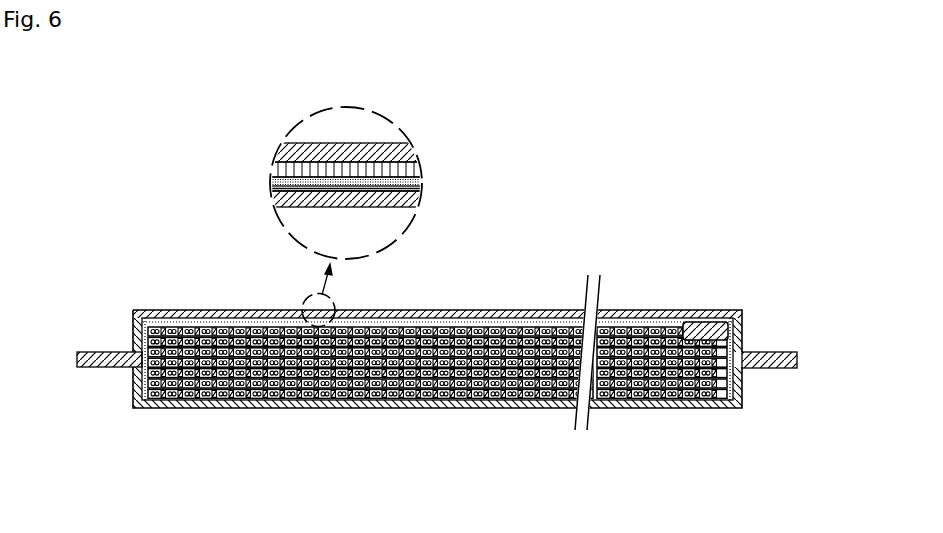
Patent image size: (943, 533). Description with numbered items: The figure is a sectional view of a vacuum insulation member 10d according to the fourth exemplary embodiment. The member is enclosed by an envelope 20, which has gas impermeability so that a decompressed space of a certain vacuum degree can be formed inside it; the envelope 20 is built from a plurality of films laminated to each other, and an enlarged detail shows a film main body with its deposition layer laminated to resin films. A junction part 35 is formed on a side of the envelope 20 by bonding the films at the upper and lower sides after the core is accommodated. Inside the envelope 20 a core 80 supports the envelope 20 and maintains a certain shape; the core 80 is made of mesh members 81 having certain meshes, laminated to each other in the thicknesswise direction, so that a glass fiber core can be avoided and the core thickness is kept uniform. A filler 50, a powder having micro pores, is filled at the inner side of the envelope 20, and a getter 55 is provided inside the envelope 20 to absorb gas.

The vacuum insulation member 10d is at (162, 229).
The envelope 20 is at (437, 361).
The junction part 35 is at (102, 352).
The filler 50 is at (438, 395).
The getter 55 is at (705, 333).
The core 80 is at (507, 395).
The mesh member 81 is at (655, 398).